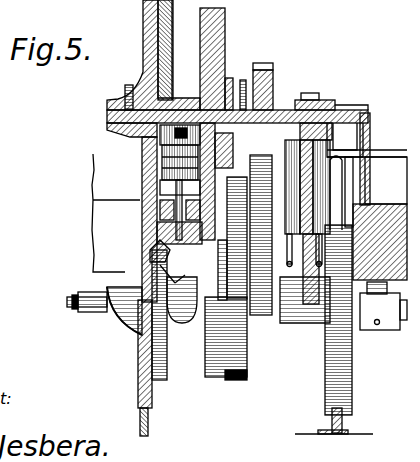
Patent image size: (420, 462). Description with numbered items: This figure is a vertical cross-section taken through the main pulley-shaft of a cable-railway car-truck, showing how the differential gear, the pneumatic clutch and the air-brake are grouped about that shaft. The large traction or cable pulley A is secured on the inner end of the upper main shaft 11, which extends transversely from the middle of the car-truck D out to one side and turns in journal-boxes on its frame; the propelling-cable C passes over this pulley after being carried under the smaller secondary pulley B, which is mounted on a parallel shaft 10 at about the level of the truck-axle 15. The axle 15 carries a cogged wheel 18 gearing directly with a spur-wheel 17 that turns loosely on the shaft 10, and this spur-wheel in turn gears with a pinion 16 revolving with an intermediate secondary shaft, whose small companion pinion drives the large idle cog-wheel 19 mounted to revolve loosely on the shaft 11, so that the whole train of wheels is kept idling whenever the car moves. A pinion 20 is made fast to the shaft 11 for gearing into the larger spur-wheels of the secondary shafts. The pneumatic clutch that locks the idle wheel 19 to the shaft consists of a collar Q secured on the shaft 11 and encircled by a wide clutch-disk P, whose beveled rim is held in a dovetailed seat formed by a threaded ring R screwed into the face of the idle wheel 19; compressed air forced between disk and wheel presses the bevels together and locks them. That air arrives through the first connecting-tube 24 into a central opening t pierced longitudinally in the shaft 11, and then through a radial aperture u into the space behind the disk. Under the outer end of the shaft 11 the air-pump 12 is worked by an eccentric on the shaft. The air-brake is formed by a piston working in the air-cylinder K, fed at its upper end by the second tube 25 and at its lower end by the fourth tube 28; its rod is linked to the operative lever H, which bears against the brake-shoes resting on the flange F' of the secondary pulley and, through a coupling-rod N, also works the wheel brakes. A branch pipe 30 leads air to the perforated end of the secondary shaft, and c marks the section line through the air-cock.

The main cable-pulley A is at (148, 28).
The radial aperture u is at (205, 62).
The idle cog-wheel 19 is at (207, 33).
The beveled confining-ring R is at (226, 30).
The clutch-disk P is at (228, 78).
The collar Q is at (240, 82).
The pinion 20 is at (273, 80).
The upper main shaft 11 is at (107, 115).
The central opening t is at (358, 115).
The first connecting-tube 24 is at (363, 135).
The section line c is at (358, 95).
The secondary cable-pulley B is at (138, 360).
The propelling-cable C is at (148, 418).
The second connecting-tube 25 is at (180, 138).
The air-cylinder K is at (160, 160).
The fourth connecting-tube 28 is at (158, 193).
The operative brake-lever H is at (157, 240).
The pinion 16 is at (235, 180).
The spur-wheel 17 is at (228, 283).
The cogged wheel 18 is at (235, 378).
The peripheral flange of secondary pulley F' is at (168, 315).
The coupling-rod N is at (178, 294).
The secondary pulley shaft 10 is at (100, 300).
The truck-axle 15 is at (93, 312).
The air-pump 12 is at (307, 222).
The gear wheel E is at (325, 382).
The car-truck D is at (380, 242).
The branch pipe 30 is at (357, 222).